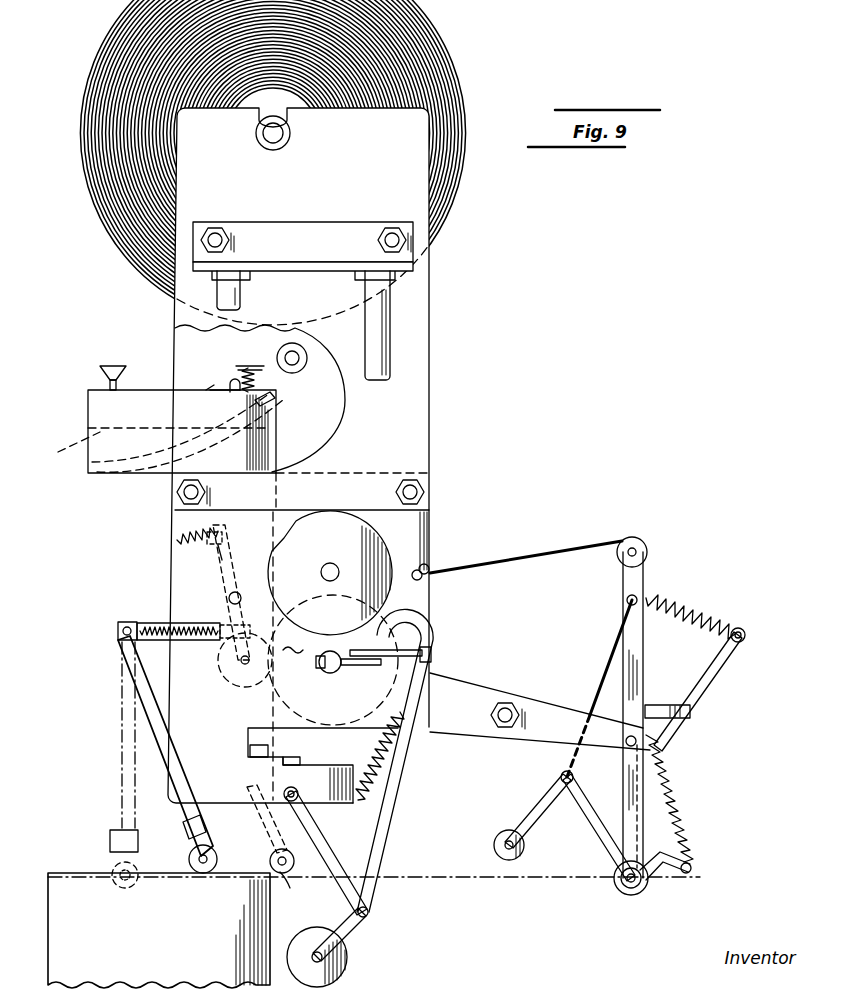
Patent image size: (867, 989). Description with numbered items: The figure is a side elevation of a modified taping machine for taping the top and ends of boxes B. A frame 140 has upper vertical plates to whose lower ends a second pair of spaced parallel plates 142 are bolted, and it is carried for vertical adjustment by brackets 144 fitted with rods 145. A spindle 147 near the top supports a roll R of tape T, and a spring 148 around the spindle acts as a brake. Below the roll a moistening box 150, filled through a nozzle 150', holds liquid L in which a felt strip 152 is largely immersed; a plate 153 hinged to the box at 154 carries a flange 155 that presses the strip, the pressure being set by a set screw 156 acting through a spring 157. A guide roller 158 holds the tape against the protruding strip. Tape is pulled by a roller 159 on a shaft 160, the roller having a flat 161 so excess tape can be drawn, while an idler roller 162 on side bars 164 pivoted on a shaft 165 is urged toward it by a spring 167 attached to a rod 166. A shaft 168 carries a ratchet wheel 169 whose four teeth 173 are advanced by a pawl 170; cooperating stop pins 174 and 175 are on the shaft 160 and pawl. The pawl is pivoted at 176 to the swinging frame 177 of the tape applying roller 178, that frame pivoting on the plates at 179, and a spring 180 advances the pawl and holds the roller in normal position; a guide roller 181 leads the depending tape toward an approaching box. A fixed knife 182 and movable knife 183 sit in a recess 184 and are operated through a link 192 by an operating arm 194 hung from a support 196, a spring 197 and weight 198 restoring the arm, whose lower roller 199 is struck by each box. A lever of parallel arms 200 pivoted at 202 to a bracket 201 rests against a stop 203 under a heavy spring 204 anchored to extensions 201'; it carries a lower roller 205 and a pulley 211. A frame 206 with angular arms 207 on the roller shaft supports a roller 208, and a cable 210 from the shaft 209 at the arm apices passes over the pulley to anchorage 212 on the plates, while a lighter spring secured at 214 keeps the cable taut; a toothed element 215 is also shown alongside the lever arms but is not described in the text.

The roll of tape R is at (440, 64).
The frame 140 is at (425, 416).
The spaced parallel plates 142 is at (176, 568).
The brackets 144 is at (322, 230).
The rods 145 is at (366, 300).
The spindle 147 is at (270, 134).
The spring 148 is at (182, 490).
The moistening box 150 is at (155, 431).
The nozzle 150' is at (99, 364).
The felt strip 152 is at (168, 458).
The plate 153 is at (230, 386).
The hinge connection 154 is at (205, 380).
The flange 155 is at (272, 398).
The set screw 156 is at (252, 366).
The spring 157 is at (246, 368).
The guide roller 158 is at (300, 354).
The roller 159 is at (275, 695).
The shaft 160 is at (322, 672).
The flat 161 is at (299, 642).
The idler roller 162 is at (225, 675).
The side bars 164 is at (215, 592).
The shaft 165 is at (229, 600).
The rod 166 is at (222, 530).
The spring 167 is at (200, 555).
The shaft 168 is at (330, 563).
The ratchet wheel 169 is at (334, 520).
The pawl 170 is at (400, 800).
The teeth 173 is at (378, 530).
The stop pin 174 is at (370, 667).
The stop pin 175 is at (366, 651).
The pivot 176 is at (372, 912).
The swinging frame 177 is at (330, 855).
The tape applying roller 178 is at (347, 960).
The pivot 179 is at (296, 788).
The spring 180 is at (380, 751).
The guide roller 181 is at (270, 860).
The fixed knife 182 is at (270, 748).
The movable knife 183 is at (283, 761).
The recess 184 is at (248, 732).
The link 192 is at (168, 727).
The operating arm 194 is at (145, 685).
The support 196 is at (160, 612).
The spring 197 is at (156, 647).
The weight 198 is at (190, 836).
The roller 199 is at (200, 873).
The arms 200 is at (623, 663).
The bracket 201 is at (540, 701).
The extensions 201' is at (718, 689).
The pivot 202 is at (640, 745).
The stop 203 is at (660, 703).
The spring 204 is at (700, 614).
The roller 205 is at (638, 893).
The frame 206 is at (598, 810).
The angular arms 207 is at (548, 805).
The roller 208 is at (494, 848).
The shaft 209 is at (574, 778).
The cable 210 is at (605, 684).
The pulley 211 is at (650, 548).
The cable anchorage 212 is at (428, 562).
The spring anchorage 214 is at (692, 866).
The rack 215 is at (690, 830).
The box B is at (68, 938).
The tape T is at (292, 885).
The liquid L is at (73, 446).